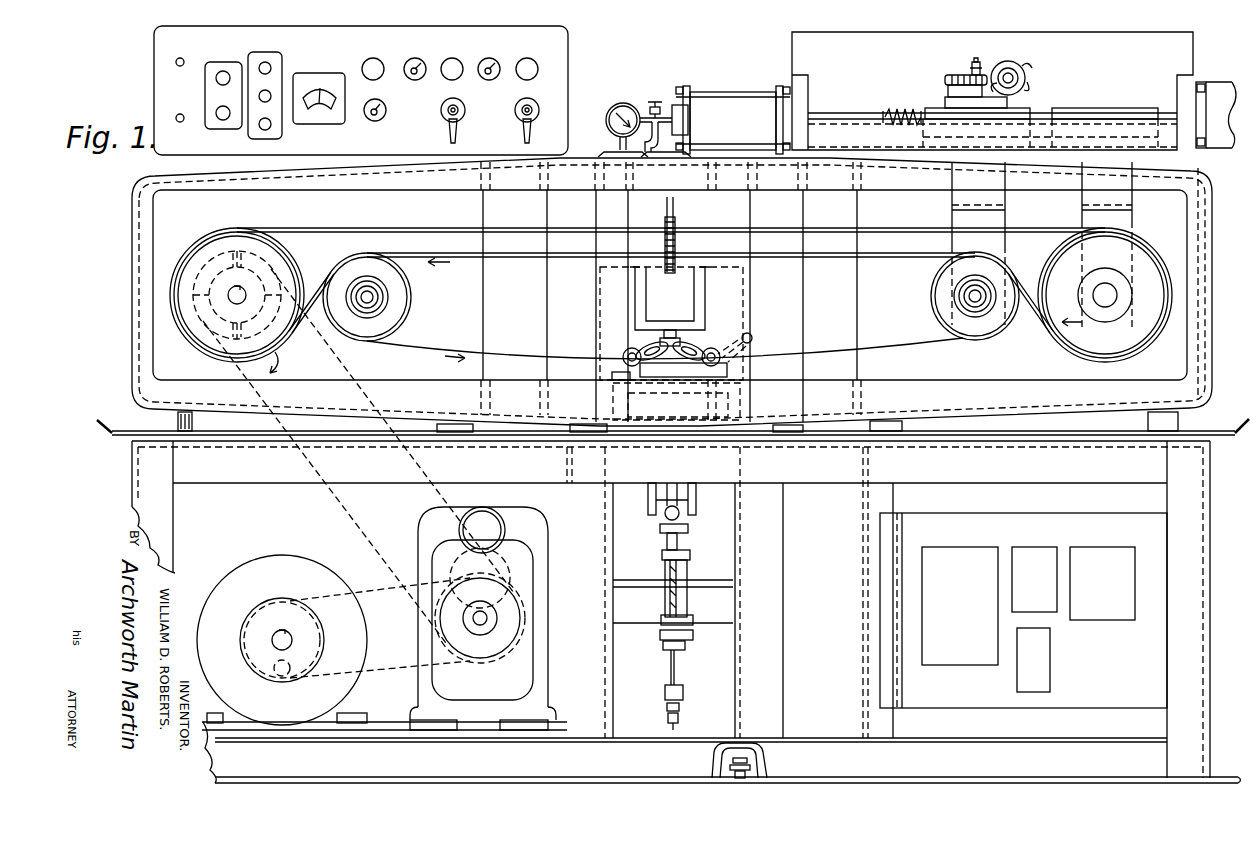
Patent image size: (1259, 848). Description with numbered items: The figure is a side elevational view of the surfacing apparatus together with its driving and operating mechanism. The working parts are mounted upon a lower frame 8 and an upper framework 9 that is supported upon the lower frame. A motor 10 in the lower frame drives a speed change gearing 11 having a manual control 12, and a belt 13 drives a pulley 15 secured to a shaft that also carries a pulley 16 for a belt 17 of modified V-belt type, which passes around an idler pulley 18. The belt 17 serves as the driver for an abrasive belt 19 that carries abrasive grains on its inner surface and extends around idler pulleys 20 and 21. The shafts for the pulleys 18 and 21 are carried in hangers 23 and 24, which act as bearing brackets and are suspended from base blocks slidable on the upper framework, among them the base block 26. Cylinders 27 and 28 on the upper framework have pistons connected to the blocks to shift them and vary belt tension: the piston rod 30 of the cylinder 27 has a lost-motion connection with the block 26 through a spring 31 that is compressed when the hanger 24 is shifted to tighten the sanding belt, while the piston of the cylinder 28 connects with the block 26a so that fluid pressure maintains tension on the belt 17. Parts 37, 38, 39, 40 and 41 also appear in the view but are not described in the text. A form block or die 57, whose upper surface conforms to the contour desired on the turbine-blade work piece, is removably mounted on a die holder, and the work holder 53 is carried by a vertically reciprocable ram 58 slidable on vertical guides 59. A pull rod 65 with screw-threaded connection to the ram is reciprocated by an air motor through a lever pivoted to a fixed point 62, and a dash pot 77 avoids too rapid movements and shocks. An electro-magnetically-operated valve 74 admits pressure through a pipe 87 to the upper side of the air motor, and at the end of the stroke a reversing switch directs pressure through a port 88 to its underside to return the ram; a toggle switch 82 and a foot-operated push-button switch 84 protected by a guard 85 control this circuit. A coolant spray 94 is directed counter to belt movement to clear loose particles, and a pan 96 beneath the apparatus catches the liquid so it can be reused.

The lower frame 8 is at (133, 495).
The upper framework 9 is at (163, 422).
The motor 10 is at (320, 566).
The speed change gearing 11 is at (522, 568).
The manual control 12 is at (497, 518).
The belt 13 is at (347, 510).
The pulley 15 is at (208, 243).
The pulley 16 is at (172, 300).
The belt 17 is at (347, 232).
The idler pulley 18 is at (1143, 257).
The abrasive belt 19 is at (387, 345).
The idler pulley 20 is at (411, 292).
The idler pulley 21 is at (935, 296).
The hanger 23 is at (1120, 218).
The hanger 24 is at (1000, 220).
The base block 26 is at (1023, 108).
The block 26a is at (1108, 108).
The cylinder 27 is at (722, 108).
The cylinder 28 is at (1227, 82).
The piston rod 30 is at (848, 107).
The spring 31 is at (898, 109).
The knurled disc 37 is at (955, 76).
The screw 38 is at (980, 64).
The hand wheel 39 is at (1025, 68).
The roller 40 is at (630, 355).
The arm 41 is at (640, 347).
The work holder 53 is at (673, 330).
The form block or die 57 is at (700, 366).
The ram 58 is at (655, 288).
The vertical guides 59 is at (627, 245).
The fixed point 62 is at (688, 722).
The pull rod 65 is at (676, 205).
The electro-magnetically-operated valve 74 is at (662, 527).
The dash pot 77 is at (668, 600).
The toggle switch 82 is at (177, 118).
The push-button type switch 84 is at (722, 760).
The guard 85 is at (770, 752).
The pipe 87 is at (678, 492).
The port 88 is at (688, 573).
The spray 94 is at (752, 338).
The pan 96 is at (118, 438).